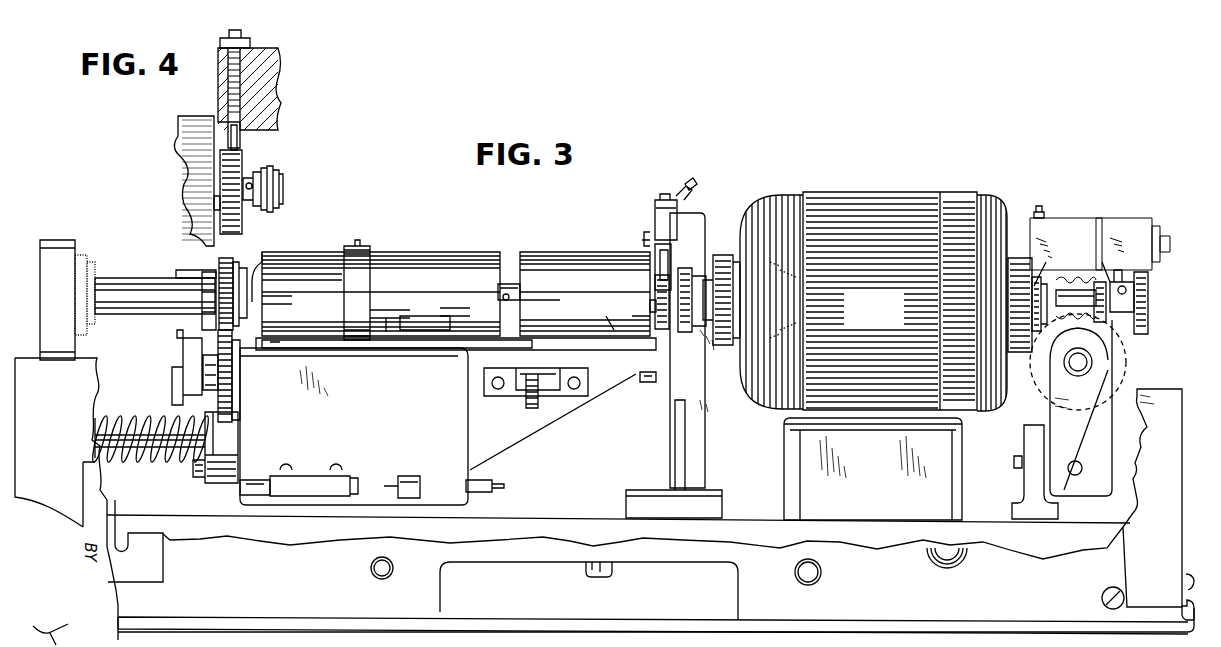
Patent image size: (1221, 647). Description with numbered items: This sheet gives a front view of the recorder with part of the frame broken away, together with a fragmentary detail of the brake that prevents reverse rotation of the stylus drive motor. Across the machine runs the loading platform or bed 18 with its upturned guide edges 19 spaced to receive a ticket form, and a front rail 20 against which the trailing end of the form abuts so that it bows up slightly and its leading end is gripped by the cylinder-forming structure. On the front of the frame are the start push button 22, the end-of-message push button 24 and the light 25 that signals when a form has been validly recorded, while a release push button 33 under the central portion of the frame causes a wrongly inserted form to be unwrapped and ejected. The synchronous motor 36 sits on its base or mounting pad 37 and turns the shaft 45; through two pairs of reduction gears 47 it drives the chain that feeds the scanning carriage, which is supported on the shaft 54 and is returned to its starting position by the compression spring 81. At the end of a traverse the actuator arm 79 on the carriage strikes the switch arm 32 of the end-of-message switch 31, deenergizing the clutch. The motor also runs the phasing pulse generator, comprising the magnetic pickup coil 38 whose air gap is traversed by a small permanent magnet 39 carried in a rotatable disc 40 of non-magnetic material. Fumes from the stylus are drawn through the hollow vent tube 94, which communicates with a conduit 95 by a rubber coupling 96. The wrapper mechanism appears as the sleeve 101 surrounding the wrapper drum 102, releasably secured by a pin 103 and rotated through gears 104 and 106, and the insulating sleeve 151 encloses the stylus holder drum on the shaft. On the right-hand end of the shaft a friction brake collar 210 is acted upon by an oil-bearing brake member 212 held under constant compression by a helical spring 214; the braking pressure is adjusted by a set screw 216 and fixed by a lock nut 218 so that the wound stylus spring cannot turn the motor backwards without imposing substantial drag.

In FIG. 3, the loading platform or bed 18 is at (392, 330).
In FIG. 3, the upturned guide edges 19 is at (364, 338).
In FIG. 3, the front rail 20 is at (440, 334).
In FIG. 3, the push button 22 is at (376, 576).
In FIG. 3, the end-of-message push button 24 is at (816, 585).
In FIG. 3, the light 25 is at (946, 562).
In FIG. 3, the end-of-message switch 31 is at (314, 462).
In FIG. 3, the switch arm 32 is at (258, 478).
In FIG. 3, the release push button 33 is at (588, 575).
In FIG. 4, the synchronous motor 36 is at (188, 182).
In FIG. 3, the synchronous motor 36 is at (873, 305).
In FIG. 3, the base or mounting pad 37 is at (873, 469).
In FIG. 3, the magnetic pickup coil 38 is at (1128, 218).
In FIG. 3, the permanent magnet 39 is at (1140, 278).
In FIG. 3, the rotatable disc 40 is at (1140, 306).
In FIG. 4, the shaft 45 is at (215, 198).
In FIG. 3, the shaft 45 is at (512, 283).
In FIG. 3, the reduction gears 47 is at (1118, 354).
In FIG. 3, the shaft 54 is at (140, 430).
In FIG. 3, the actuator arm 79 is at (394, 472).
In FIG. 3, the compression spring 81 is at (156, 454).
In FIG. 3, the hollow vent tube 94 is at (158, 298).
In FIG. 3, the conduit 95 is at (44, 240).
In FIG. 3, the rubber coupling 96 is at (88, 252).
In FIG. 3, the sleeve 101 is at (368, 350).
In FIG. 3, the wrapper drum 102 is at (442, 204).
In FIG. 3, the pin 103 is at (358, 240).
In FIG. 3, the gear 104 is at (234, 258).
In FIG. 3, the gear 106 is at (236, 392).
In FIG. 3, the sleeve 151 is at (604, 250).
In FIG. 4, the friction brake collar 210 is at (236, 236).
In FIG. 3, the friction brake collar 210 is at (1042, 322).
In FIG. 4, the oil-bearing brake member 212 is at (237, 118).
In FIG. 3, the oil-bearing brake member 212 is at (1034, 294).
In FIG. 4, the helical spring 214 is at (270, 95).
In FIG. 4, the set screw 216 is at (240, 68).
In FIG. 3, the set screw 216 is at (1040, 208).
In FIG. 4, the lock nut 218 is at (248, 43).
In FIG. 3, the lock nut 218 is at (1046, 218).